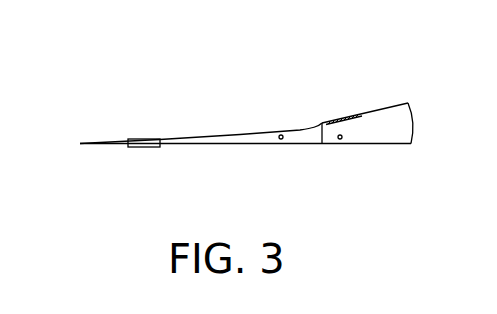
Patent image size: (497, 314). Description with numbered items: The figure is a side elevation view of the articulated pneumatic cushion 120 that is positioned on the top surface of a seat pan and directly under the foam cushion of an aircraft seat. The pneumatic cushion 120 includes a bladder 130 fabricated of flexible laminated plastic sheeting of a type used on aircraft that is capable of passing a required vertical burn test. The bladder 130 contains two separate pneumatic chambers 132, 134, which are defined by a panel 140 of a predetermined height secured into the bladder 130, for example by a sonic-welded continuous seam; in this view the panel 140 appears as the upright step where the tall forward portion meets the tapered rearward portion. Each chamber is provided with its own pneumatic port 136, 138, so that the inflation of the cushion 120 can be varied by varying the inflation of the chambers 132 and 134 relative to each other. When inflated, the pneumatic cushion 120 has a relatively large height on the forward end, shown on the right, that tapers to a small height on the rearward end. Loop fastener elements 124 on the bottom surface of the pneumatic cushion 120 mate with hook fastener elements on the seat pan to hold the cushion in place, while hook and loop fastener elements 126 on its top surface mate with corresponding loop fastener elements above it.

The pneumatic cushion 120 is at (168, 84).
The loop fastener elements 124 is at (144, 148).
The hook and loop fastener elements 126 is at (143, 139).
The bladder 130 is at (407, 102).
The pneumatic chamber 132 is at (414, 120).
The pneumatic chamber 134 is at (238, 135).
The pneumatic port 136 is at (339, 139).
The pneumatic port 138 is at (279, 139).
The panel 140 is at (318, 130).